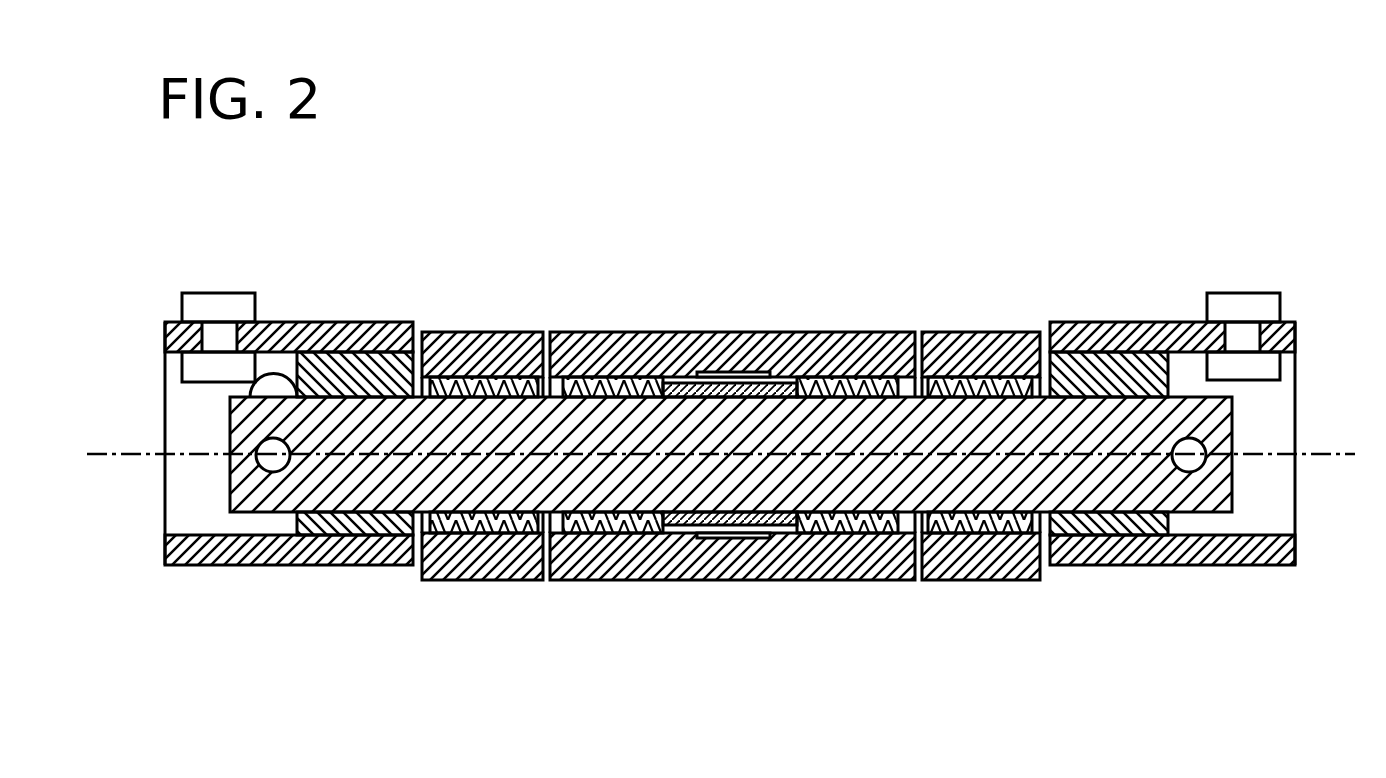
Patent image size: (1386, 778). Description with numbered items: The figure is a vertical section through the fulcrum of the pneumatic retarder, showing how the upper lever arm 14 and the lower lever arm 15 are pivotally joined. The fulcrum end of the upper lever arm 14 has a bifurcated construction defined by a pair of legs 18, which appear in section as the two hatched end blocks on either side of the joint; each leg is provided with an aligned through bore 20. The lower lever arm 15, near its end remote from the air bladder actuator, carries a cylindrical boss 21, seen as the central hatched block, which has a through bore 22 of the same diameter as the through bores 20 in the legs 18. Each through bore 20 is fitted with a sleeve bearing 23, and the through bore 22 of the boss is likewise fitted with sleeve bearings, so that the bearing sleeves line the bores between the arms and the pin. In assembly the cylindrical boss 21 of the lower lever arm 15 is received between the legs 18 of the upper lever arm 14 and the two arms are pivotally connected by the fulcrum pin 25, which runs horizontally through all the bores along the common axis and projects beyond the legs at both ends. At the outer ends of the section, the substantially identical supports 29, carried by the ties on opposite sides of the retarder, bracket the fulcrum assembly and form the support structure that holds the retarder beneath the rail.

The upper lever arm 14 is at (443, 582).
The lower lever arm 15 is at (736, 576).
The legs 18 is at (968, 345).
The through bores 20 is at (496, 525).
The cylindrical boss 21 is at (875, 340).
The through bore 22 is at (627, 387).
The sleeve bearing 23 is at (455, 378).
The fulcrum pin 25 is at (737, 405).
The supports 29 is at (265, 565).